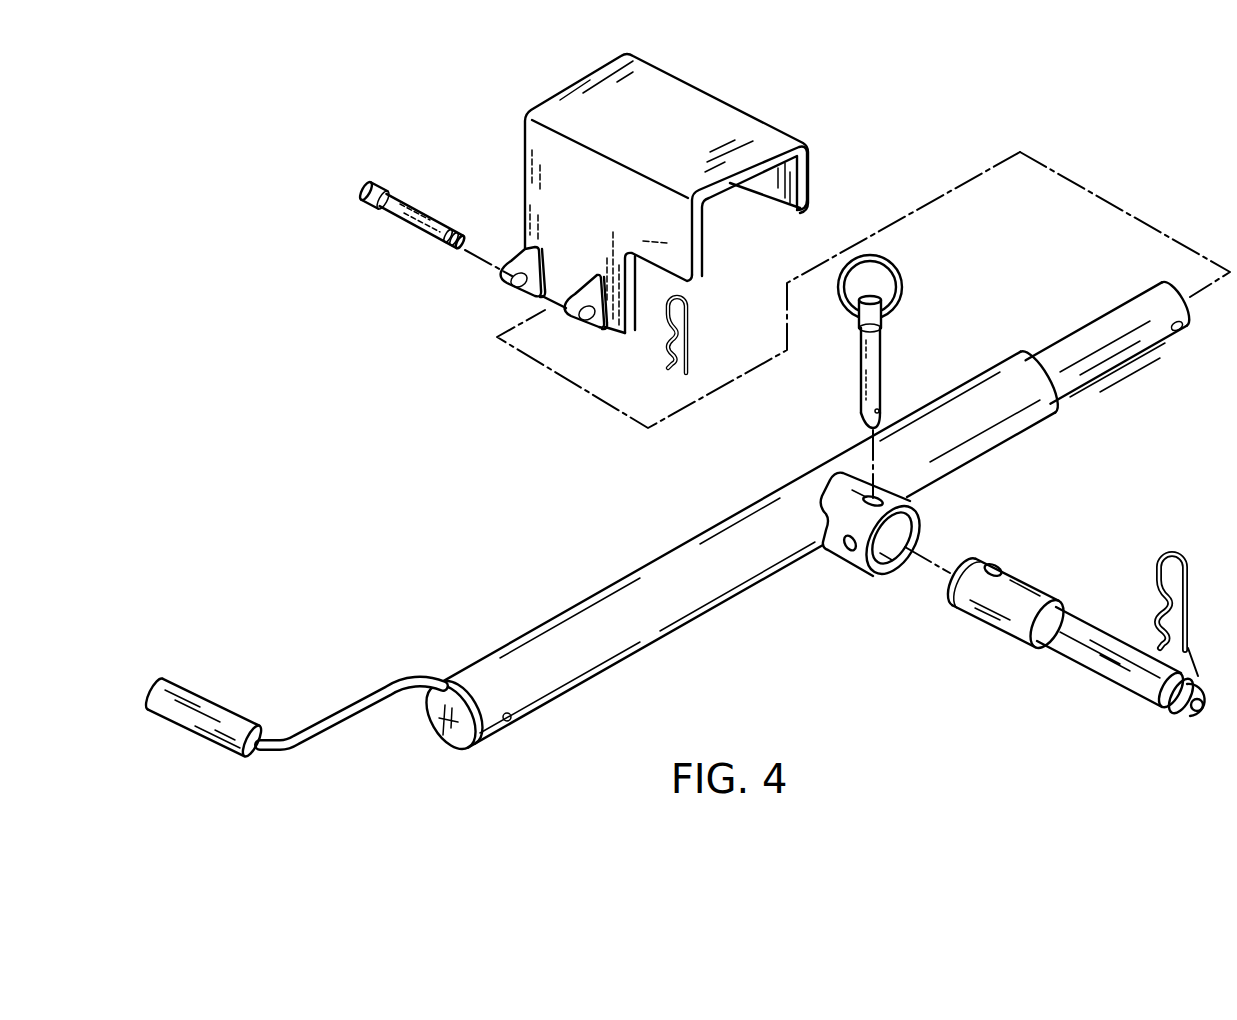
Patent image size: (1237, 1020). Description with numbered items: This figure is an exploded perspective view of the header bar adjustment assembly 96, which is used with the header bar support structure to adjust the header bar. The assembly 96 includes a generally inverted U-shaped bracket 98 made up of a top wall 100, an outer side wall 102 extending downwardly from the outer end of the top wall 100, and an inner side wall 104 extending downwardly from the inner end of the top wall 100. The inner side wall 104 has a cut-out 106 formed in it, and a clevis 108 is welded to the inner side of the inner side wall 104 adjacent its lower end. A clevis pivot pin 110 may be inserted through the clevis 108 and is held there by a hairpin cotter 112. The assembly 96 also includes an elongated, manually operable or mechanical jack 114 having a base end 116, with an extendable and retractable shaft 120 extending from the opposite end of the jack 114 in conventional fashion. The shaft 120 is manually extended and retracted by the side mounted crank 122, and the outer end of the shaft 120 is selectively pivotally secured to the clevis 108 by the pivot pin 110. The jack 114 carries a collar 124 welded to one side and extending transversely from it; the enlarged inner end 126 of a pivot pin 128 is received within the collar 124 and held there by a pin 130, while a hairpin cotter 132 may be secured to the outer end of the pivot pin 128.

The header bar adjustment assembly 96 is at (746, 549).
The inverted U-shaped bracket 98 is at (745, 102).
The top wall 100 is at (662, 138).
The outer side wall 102 is at (795, 178).
The inner side wall 104 is at (680, 240).
The cut-out 106 is at (652, 295).
The clevis 108 is at (513, 302).
The clevis pivot pin 110 is at (410, 207).
The hairpin cotter 112 is at (690, 343).
The jack 114 is at (600, 589).
The base end 116 is at (437, 727).
The extendable and retractable shaft 120 is at (1073, 345).
The side mounted crank 122 is at (322, 720).
The collar 124 is at (918, 497).
The enlarged inner end 126 is at (1033, 580).
The pivot pin 128 is at (1097, 662).
The pin 130 is at (881, 351).
The hairpin cotter 132 is at (1183, 556).